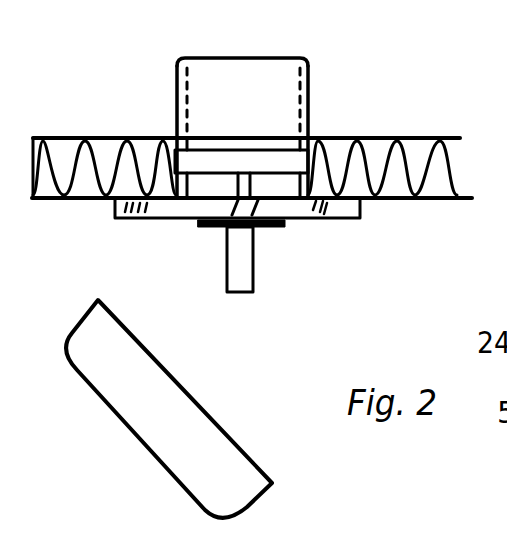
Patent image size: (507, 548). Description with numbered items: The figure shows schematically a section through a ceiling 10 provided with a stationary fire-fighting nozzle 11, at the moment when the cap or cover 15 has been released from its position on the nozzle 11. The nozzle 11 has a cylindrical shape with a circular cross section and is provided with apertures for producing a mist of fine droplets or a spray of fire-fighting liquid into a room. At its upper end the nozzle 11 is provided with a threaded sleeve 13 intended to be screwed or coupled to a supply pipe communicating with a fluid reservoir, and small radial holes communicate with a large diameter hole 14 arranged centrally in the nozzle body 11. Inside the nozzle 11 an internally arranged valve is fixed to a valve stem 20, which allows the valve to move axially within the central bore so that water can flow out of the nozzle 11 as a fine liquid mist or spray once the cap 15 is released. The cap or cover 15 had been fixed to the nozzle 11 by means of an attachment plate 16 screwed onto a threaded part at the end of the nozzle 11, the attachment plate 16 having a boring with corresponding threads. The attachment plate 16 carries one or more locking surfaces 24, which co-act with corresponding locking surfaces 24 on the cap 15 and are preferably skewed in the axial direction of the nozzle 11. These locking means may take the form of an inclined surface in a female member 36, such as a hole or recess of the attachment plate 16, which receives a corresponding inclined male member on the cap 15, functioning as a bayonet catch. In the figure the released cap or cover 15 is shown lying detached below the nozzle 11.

The ceiling 10 is at (427, 138).
The nozzle 11 is at (310, 93).
The threaded sleeve 13 is at (178, 90).
The large diameter hole 14 is at (258, 58).
The cap or cover 15 is at (185, 420).
The attachment plate 16 is at (360, 212).
The valve stem 20 is at (230, 273).
The locking surfaces 24 is at (325, 222).
The female member 36 is at (135, 220).